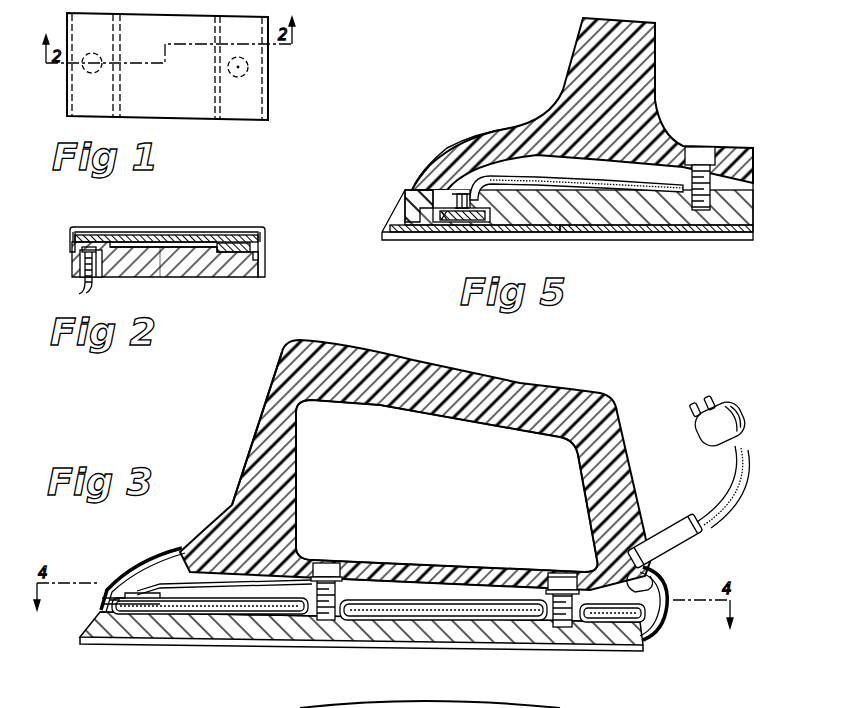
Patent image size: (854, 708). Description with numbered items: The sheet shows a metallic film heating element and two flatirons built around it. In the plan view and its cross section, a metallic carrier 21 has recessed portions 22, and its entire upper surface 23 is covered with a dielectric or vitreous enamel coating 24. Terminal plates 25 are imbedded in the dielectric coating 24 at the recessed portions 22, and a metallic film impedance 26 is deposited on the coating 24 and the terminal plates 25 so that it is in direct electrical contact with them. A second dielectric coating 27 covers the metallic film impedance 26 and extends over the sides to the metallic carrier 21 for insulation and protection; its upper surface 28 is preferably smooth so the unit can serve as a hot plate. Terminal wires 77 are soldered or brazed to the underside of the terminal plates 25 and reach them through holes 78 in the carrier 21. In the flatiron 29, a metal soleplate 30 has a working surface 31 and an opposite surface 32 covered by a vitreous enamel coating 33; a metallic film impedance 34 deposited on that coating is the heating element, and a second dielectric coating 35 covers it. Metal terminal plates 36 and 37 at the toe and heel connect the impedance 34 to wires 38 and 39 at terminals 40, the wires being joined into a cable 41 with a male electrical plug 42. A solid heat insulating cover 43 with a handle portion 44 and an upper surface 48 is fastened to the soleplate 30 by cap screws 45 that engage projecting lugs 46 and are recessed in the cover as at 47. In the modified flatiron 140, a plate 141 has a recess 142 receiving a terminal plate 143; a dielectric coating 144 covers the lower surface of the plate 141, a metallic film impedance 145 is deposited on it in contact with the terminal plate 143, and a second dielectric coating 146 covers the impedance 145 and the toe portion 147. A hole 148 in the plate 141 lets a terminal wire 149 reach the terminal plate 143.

In FIG. 1, the holes 78 is at (84, 71).
In FIG. 2, the holes 78 is at (103, 272).
In FIG. 1, the second dielectric coating 27 is at (252, 107).
In FIG. 2, the second dielectric coating 27 is at (152, 231).
In FIG. 2, the upper surface 28 is at (131, 213).
In FIG. 2, the metallic film impedance 26 is at (167, 239).
In FIG. 2, the dielectric coating 24 is at (218, 241).
In FIG. 2, the terminal plates 25 is at (73, 240).
In FIG. 2, the recessed portions 22 is at (70, 262).
In FIG. 2, the terminal wires 77 is at (86, 288).
In FIG. 2, the upper surface 23 is at (160, 268).
In FIG. 2, the metallic carrier 21 is at (195, 270).
In FIG. 5, the flatiron 140 is at (536, 110).
In FIG. 5, the recess 142 is at (436, 183).
In FIG. 5, the toe portion 147 is at (417, 193).
In FIG. 5, the hole 148 is at (457, 194).
In FIG. 5, the terminal wire 149 is at (588, 181).
In FIG. 5, the metallic film impedance 145 is at (417, 228).
In FIG. 5, the terminal plate 143 is at (407, 224).
In FIG. 5, the second dielectric coating 146 is at (453, 231).
In FIG. 5, the plate 141 is at (610, 228).
In FIG. 5, the dielectric coating 144 is at (628, 229).
In FIG. 3, the handle portion 44 is at (497, 430).
In FIG. 3, the flatiron 29 is at (334, 476).
In FIG. 3, the cover 43 is at (204, 538).
In FIG. 3, the upper surface 48 is at (416, 566).
In FIG. 3, the metal soleplate 30 is at (547, 641).
In FIG. 3, the working surface 31 is at (508, 641).
In FIG. 3, the vitreous enamel coating 33 is at (104, 624).
In FIG. 3, the second dielectric coating 35 is at (253, 605).
In FIG. 3, the opposite surface 32 is at (458, 618).
In FIG. 3, the metallic film impedance 34 is at (402, 628).
In FIG. 3, the metal terminal plate 37 is at (614, 638).
In FIG. 3, the wire 38 is at (177, 590).
In FIG. 3, the metal terminal plate 36 is at (101, 600).
In FIG. 3, the projecting lugs 46 is at (341, 573).
In FIG. 3, the cap screws 45 is at (342, 577).
In FIG. 3, the recess 47 is at (557, 576).
In FIG. 3, the terminals 40 is at (121, 583).
In FIG. 3, the wire 39 is at (660, 588).
In FIG. 3, the cable 41 is at (686, 544).
In FIG. 3, the male electrical plug 42 is at (713, 440).